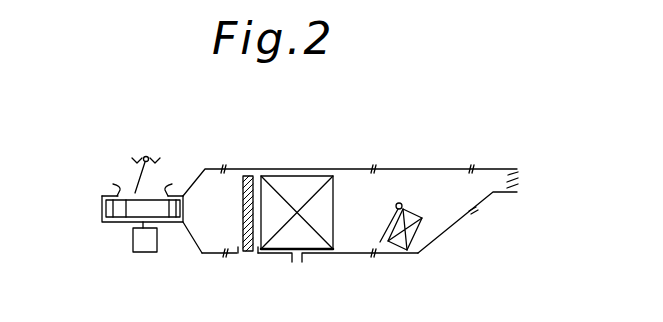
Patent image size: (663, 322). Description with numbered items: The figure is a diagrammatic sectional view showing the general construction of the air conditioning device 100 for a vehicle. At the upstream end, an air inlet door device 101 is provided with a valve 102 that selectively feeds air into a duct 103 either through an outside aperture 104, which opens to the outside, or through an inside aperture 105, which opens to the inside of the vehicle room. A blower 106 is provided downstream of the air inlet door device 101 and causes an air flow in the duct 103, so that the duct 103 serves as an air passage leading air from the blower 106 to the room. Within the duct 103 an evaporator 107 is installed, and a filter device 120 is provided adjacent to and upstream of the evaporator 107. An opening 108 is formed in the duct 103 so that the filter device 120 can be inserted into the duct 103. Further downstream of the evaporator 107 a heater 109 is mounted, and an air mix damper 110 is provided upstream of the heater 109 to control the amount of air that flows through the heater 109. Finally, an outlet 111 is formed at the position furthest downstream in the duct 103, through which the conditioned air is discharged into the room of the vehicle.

The air conditioning device 100 is at (341, 263).
The air inlet door device 101 is at (150, 146).
The valve 102 is at (140, 173).
The duct 103 is at (290, 168).
The outside aperture 104 is at (122, 172).
The inside aperture 105 is at (160, 173).
The blower 106 is at (122, 232).
The evaporator 107 is at (305, 183).
The opening 108 is at (250, 255).
The heater 109 is at (413, 226).
The air mix damper 110 is at (398, 203).
The outlet 111 is at (503, 178).
The filter device 120 is at (240, 250).